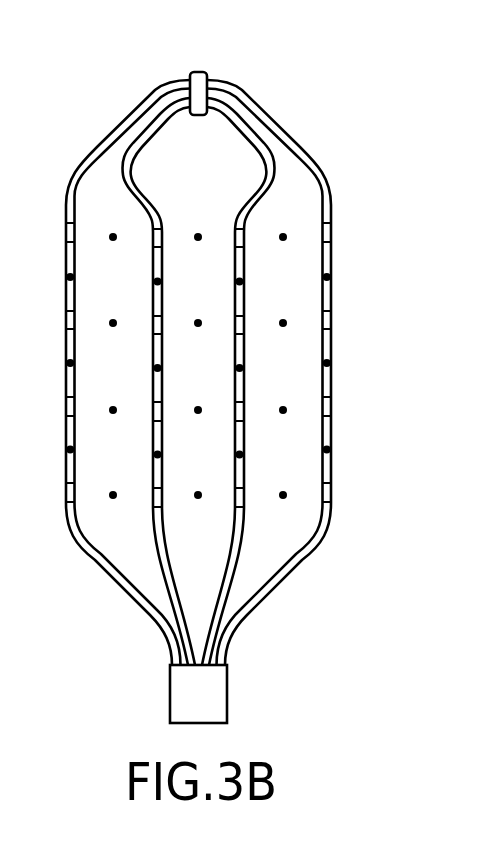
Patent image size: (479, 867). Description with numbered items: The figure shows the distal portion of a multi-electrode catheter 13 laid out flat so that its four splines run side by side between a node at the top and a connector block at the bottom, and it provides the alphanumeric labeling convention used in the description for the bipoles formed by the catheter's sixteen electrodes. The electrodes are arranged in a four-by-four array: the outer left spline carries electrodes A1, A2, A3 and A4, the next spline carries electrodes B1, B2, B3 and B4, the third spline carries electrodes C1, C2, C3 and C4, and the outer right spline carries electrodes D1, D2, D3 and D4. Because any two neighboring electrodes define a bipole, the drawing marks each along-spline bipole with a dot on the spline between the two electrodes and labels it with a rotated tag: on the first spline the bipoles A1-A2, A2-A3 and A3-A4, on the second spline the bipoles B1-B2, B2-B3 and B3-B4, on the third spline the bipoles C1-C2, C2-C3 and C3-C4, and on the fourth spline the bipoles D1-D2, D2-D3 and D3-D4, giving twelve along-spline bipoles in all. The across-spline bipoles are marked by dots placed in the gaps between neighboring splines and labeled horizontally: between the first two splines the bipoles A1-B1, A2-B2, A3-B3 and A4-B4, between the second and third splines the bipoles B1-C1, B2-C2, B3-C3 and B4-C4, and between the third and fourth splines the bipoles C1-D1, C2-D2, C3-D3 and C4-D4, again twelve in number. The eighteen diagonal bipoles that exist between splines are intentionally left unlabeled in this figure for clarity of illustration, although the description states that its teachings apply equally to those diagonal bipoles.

The catheter 13 is at (393, 122).
The electrode A1 is at (70, 232).
The electrode A2 is at (70, 320).
The electrode A3 is at (70, 406).
The electrode A4 is at (70, 492).
The electrode B1 is at (157, 238).
The electrode B2 is at (157, 325).
The electrode B3 is at (157, 411).
The electrode B4 is at (157, 497).
The electrode C1 is at (239, 238).
The electrode C2 is at (239, 325).
The electrode C3 is at (239, 411).
The electrode C4 is at (239, 497).
The electrode D1 is at (327, 232).
The electrode D2 is at (327, 320).
The electrode D3 is at (327, 406).
The electrode D4 is at (327, 492).
The along-spline bipole A1-A2 is at (54, 277).
The along-spline bipole A2-A3 is at (54, 361).
The along-spline bipole A3-A4 is at (54, 449).
The along-spline bipole B1-B2 is at (143, 264).
The along-spline bipole B2-B3 is at (143, 346).
The along-spline bipole B3-B4 is at (143, 434).
The along-spline bipole C1-C2 is at (225, 266).
The along-spline bipole C2-C3 is at (225, 346).
The along-spline bipole C3-C4 is at (225, 434).
The along-spline bipole D1-D2 is at (312, 266).
The along-spline bipole D2-D3 is at (312, 346).
The along-spline bipole D3-D4 is at (312, 434).
The across-spline bipole A1-B1 is at (113, 221).
The across-spline bipole A2-B2 is at (113, 309).
The across-spline bipole A3-B3 is at (113, 396).
The across-spline bipole A4-B4 is at (113, 482).
The across-spline bipole B1-C1 is at (197, 221).
The across-spline bipole B2-C2 is at (197, 309).
The across-spline bipole B3-C3 is at (197, 396).
The across-spline bipole B4-C4 is at (197, 482).
The across-spline bipole C1-D1 is at (282, 221).
The across-spline bipole C2-D2 is at (282, 309).
The across-spline bipole C3-D3 is at (282, 396).
The across-spline bipole C4-D4 is at (282, 482).